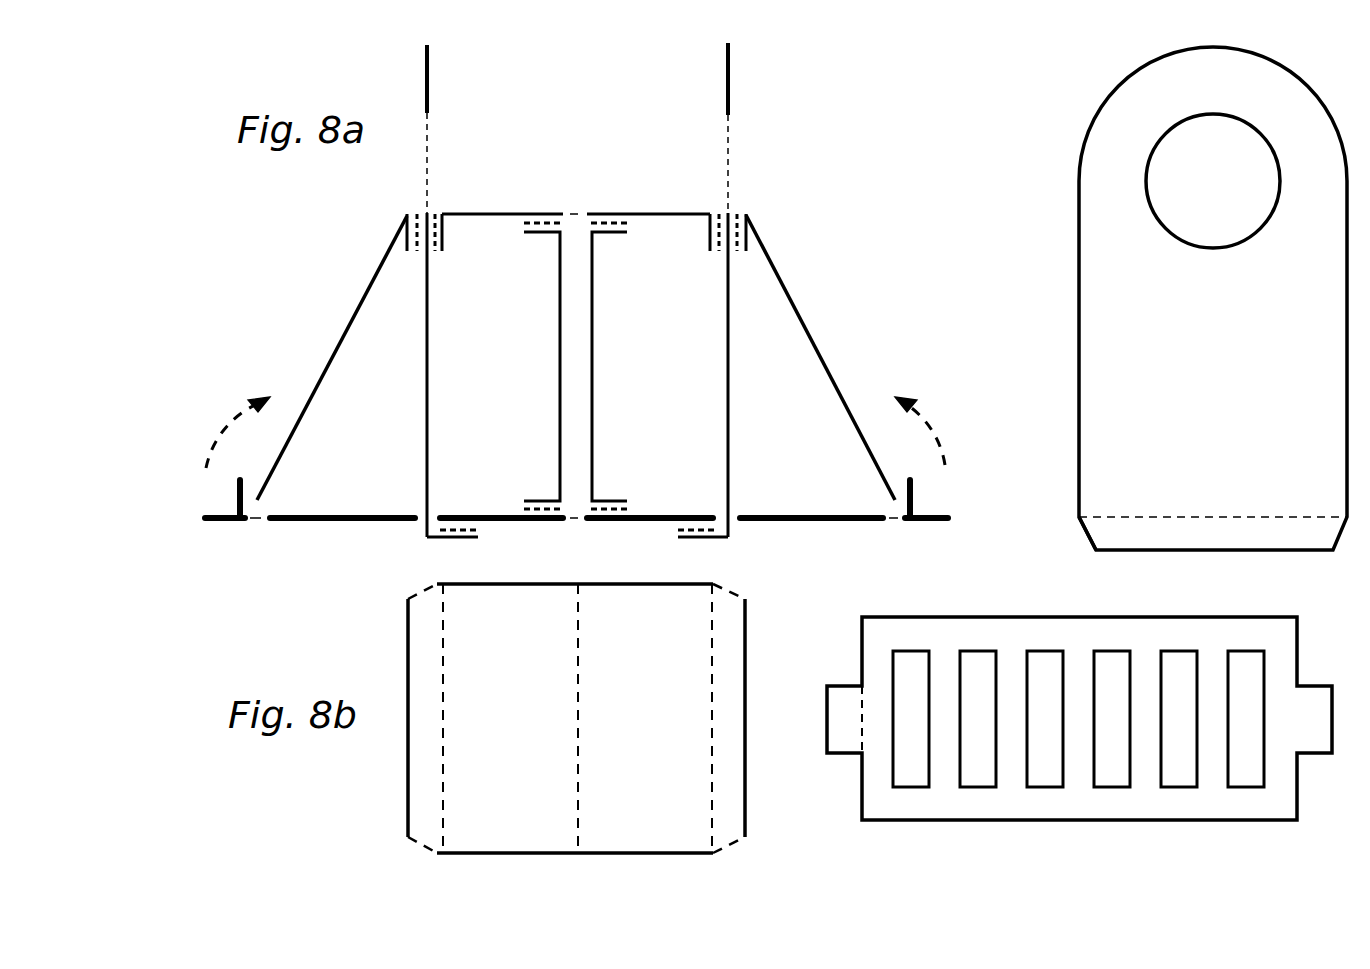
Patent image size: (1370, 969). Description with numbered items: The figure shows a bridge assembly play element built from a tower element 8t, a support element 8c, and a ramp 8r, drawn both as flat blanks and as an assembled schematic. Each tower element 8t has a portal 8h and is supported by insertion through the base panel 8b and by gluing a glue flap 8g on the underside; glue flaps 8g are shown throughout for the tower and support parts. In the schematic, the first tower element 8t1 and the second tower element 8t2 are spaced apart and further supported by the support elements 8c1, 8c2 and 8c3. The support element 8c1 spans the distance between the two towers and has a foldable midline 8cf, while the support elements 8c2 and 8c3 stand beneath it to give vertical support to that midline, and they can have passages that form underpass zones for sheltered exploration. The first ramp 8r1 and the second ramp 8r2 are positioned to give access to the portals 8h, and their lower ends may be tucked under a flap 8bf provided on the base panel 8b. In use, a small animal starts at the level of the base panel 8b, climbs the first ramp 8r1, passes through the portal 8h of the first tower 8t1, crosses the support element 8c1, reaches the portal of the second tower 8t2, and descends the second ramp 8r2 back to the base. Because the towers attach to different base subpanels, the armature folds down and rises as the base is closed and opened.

In FIG. 8A, the first tower element 8t1 is at (481, 98).
In FIG. 8A, the second tower element 8t2 is at (785, 100).
In FIG. 8A, the portal 8h is at (728, 163).
In FIG. 8B, the portal 8h is at (1213, 181).
In FIG. 8A, the spanning support element 8c1 is at (522, 200).
In FIG. 8A, the second support element 8c2 is at (550, 387).
In FIG. 8A, the third support element 8c3 is at (650, 387).
In FIG. 8A, the first ramp 8r1 is at (325, 333).
In FIG. 8A, the second ramp 8r2 is at (865, 333).
In FIG. 8A, the base panel 8b is at (1000, 530).
In FIG. 8A, the flap 8bf is at (241, 520).
In FIG. 8A, the glue flap 8g is at (455, 537).
In FIG. 8B, the glue flap 8g is at (420, 797).
In FIG. 8B, the support element 8c is at (576, 718).
In FIG. 8B, the foldable midline 8cf is at (578, 755).
In FIG. 8B, the ramp 8r is at (1064, 718).
In FIG. 8B, the tower element 8t is at (1213, 298).